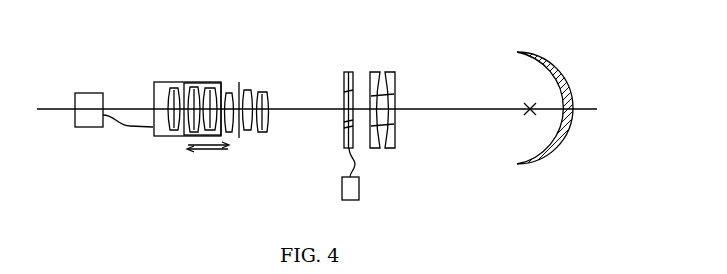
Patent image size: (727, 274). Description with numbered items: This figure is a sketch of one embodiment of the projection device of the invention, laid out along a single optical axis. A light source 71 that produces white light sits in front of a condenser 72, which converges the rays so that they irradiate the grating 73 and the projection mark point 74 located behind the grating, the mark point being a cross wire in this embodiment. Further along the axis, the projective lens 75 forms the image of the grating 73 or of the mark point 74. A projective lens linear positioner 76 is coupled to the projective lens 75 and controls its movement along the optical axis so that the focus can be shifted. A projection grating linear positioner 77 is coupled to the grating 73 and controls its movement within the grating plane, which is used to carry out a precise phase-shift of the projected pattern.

The light source 71 is at (500, 63).
The condenser 72 is at (548, 90).
The grating 73 is at (320, 80).
The projection mark point 74 is at (388, 80).
The projective lens 75 is at (211, 83).
The projective lens linear positioner 76 is at (114, 70).
The projection grating linear positioner 77 is at (382, 187).